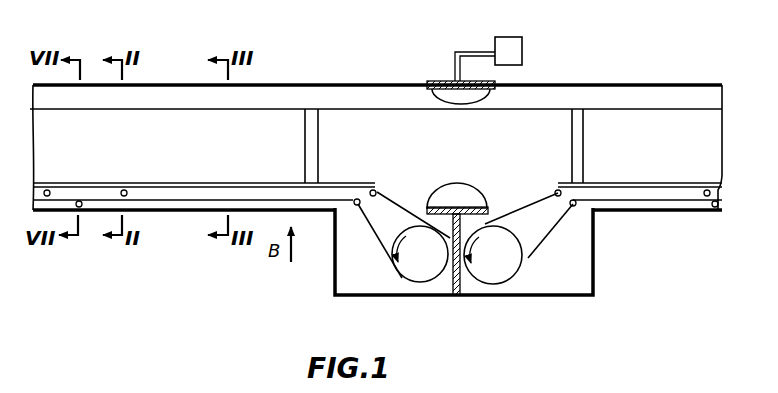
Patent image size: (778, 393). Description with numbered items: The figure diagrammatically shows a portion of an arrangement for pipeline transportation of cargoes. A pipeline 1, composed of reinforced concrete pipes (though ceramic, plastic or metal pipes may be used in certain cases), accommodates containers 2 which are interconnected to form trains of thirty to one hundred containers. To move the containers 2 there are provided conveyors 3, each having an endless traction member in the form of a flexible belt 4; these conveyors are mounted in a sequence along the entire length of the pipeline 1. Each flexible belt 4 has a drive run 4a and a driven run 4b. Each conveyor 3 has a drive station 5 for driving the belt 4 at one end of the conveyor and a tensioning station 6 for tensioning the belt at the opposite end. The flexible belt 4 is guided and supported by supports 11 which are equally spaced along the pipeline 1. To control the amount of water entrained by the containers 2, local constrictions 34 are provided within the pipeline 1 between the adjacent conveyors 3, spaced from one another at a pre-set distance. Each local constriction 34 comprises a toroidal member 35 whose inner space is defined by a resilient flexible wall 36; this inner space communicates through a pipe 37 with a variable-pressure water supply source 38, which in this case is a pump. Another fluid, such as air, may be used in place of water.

The pipeline 1 is at (655, 84).
The container 2 is at (110, 125).
The conveyor 3 is at (421, 286).
The flexible belt 4 is at (650, 209).
The drive run 4a is at (402, 210).
The driven run 4b is at (357, 206).
The drive station 5 is at (484, 272).
The tensioning station 6 is at (410, 268).
The support 11 is at (123, 197).
The local constriction 34 is at (475, 182).
The toroidal member 35 is at (428, 82).
The resilient flexible wall 36 is at (483, 94).
The pipe 37 is at (470, 52).
The variable-pressure water supply source 38 is at (522, 47).